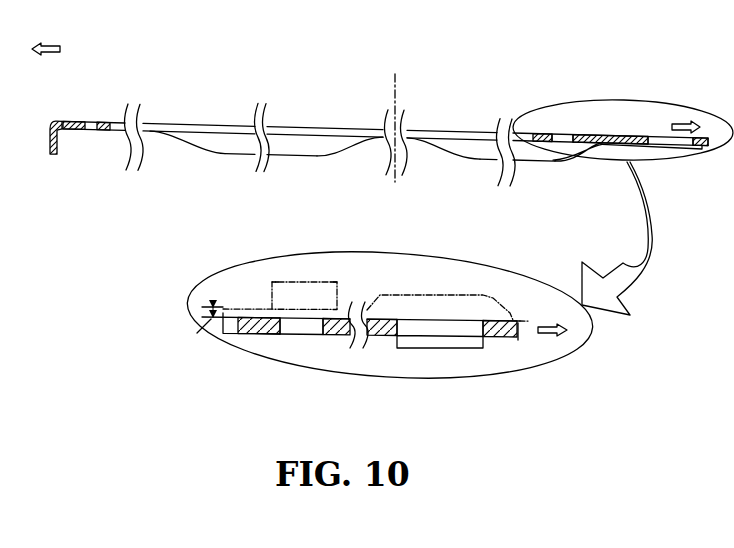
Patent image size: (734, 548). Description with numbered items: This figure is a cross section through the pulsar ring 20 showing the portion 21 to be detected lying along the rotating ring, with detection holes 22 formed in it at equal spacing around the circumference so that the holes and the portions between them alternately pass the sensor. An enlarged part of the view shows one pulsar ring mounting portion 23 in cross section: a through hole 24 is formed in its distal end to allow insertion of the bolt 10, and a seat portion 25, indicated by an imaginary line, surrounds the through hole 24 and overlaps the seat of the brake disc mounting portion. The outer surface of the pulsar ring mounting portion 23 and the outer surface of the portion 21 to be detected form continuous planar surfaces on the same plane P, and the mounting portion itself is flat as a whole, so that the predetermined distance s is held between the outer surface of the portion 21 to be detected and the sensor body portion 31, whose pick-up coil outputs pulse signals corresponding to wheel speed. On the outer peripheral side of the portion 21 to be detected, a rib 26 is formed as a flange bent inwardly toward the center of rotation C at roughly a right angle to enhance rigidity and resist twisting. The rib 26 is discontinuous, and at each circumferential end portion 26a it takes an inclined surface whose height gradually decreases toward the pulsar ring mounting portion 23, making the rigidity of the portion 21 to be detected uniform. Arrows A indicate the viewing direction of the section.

The bolt 10 is at (410, 302).
The pulsar ring 20 is at (340, 120).
The portion to be detected 21 is at (98, 120).
The detection holes 22 is at (82, 120).
The pulsar ring mounting portion 23 is at (612, 133).
The through hole 24 is at (667, 135).
The seat portion 25 is at (500, 340).
The rib 26 is at (60, 143).
The circumferential end portion 26a is at (163, 137).
The sensor body portion 31 is at (298, 285).
The insertion direction A is at (366, 189).
The center of rotation C is at (395, 116).
The plane P is at (197, 331).
The predetermined distance s is at (212, 302).